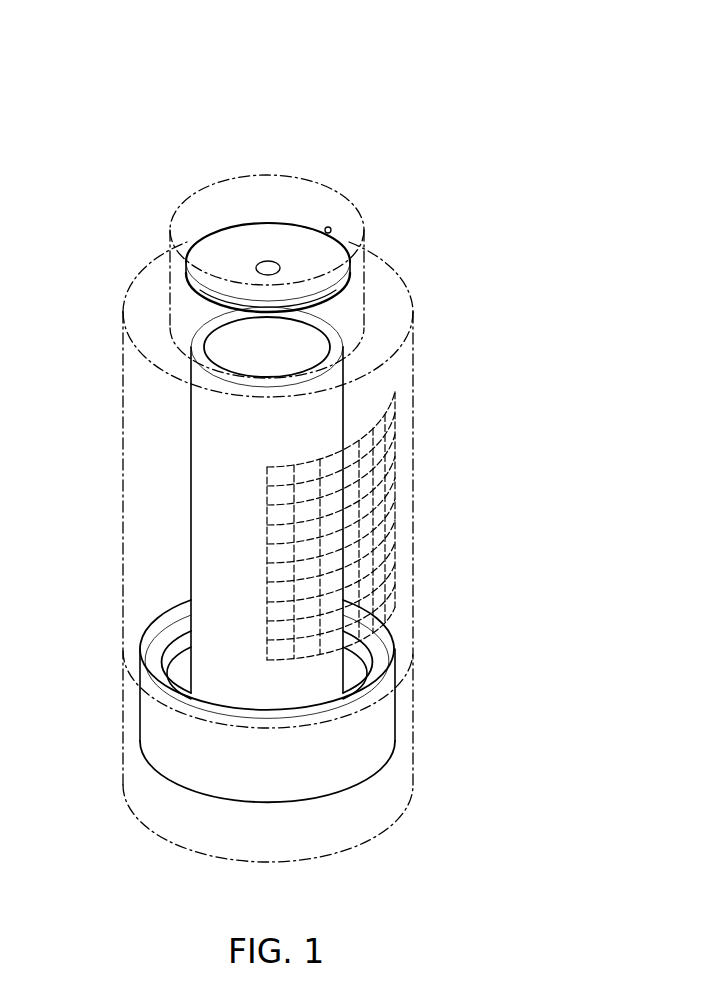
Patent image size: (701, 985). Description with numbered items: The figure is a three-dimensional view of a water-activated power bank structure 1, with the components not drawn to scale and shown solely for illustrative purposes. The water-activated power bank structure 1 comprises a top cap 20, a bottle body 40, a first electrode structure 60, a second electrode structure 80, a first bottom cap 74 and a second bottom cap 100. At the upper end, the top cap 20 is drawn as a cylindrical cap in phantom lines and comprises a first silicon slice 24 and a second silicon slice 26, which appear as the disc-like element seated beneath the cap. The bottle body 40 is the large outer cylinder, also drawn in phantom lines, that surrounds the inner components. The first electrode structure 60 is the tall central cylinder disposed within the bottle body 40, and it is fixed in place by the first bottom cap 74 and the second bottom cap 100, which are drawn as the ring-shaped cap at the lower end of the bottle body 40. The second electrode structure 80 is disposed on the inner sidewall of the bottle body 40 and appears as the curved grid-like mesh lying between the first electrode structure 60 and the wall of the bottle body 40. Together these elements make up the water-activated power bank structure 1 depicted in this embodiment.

The water-activated power bank structure 1 is at (77, 157).
The top cap 20 is at (312, 190).
The first silicon slice 24 is at (195, 295).
The second silicon slice 26 is at (203, 302).
The bottle body 40 is at (393, 373).
The first electrode structure 60 is at (210, 482).
The first bottom cap 74 is at (155, 713).
The second electrode structure 80 is at (380, 547).
The second bottom cap 100 is at (388, 783).